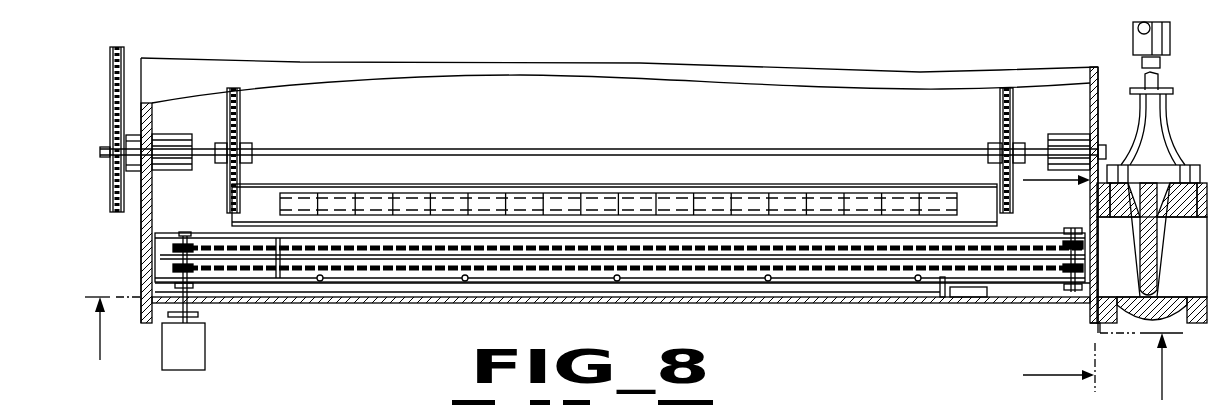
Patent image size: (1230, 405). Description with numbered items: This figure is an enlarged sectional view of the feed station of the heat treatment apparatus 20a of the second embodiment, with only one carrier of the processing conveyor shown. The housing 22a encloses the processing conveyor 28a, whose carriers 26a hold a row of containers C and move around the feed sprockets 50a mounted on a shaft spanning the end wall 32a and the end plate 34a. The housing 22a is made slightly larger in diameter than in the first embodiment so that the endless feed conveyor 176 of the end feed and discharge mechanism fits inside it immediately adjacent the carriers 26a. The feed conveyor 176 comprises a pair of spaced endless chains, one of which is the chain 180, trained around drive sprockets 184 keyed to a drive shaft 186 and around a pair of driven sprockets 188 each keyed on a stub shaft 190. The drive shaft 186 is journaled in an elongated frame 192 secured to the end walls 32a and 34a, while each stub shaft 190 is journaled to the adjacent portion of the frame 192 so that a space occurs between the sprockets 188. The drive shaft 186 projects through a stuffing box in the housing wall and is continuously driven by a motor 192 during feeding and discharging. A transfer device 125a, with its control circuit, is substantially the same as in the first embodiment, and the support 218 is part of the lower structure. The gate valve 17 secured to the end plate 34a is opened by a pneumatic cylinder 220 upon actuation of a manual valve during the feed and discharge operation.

The heat treatment apparatus 20a is at (140, 44).
The housing 22a is at (688, 305).
The carriers 26a is at (503, 187).
The processing conveyor 28a is at (238, 222).
The end wall 32a is at (153, 114).
The end plate 34a is at (1091, 100).
The feed sprockets 50a is at (240, 127).
The transfer device 125a is at (638, 292).
The endless feed conveyor 176 is at (428, 277).
The endless chain 180 is at (258, 245).
The drive sprockets 184 is at (180, 268).
The drive shaft 186 is at (178, 317).
The driven sprockets 188 is at (1080, 247).
The stub shaft 190 is at (1070, 229).
The elongated frame 192 is at (1016, 305).
The support 218 is at (278, 282).
The pneumatic cylinder 220 is at (1133, 40).
The valve 17 is at (1165, 218).
The containers C is at (398, 193).